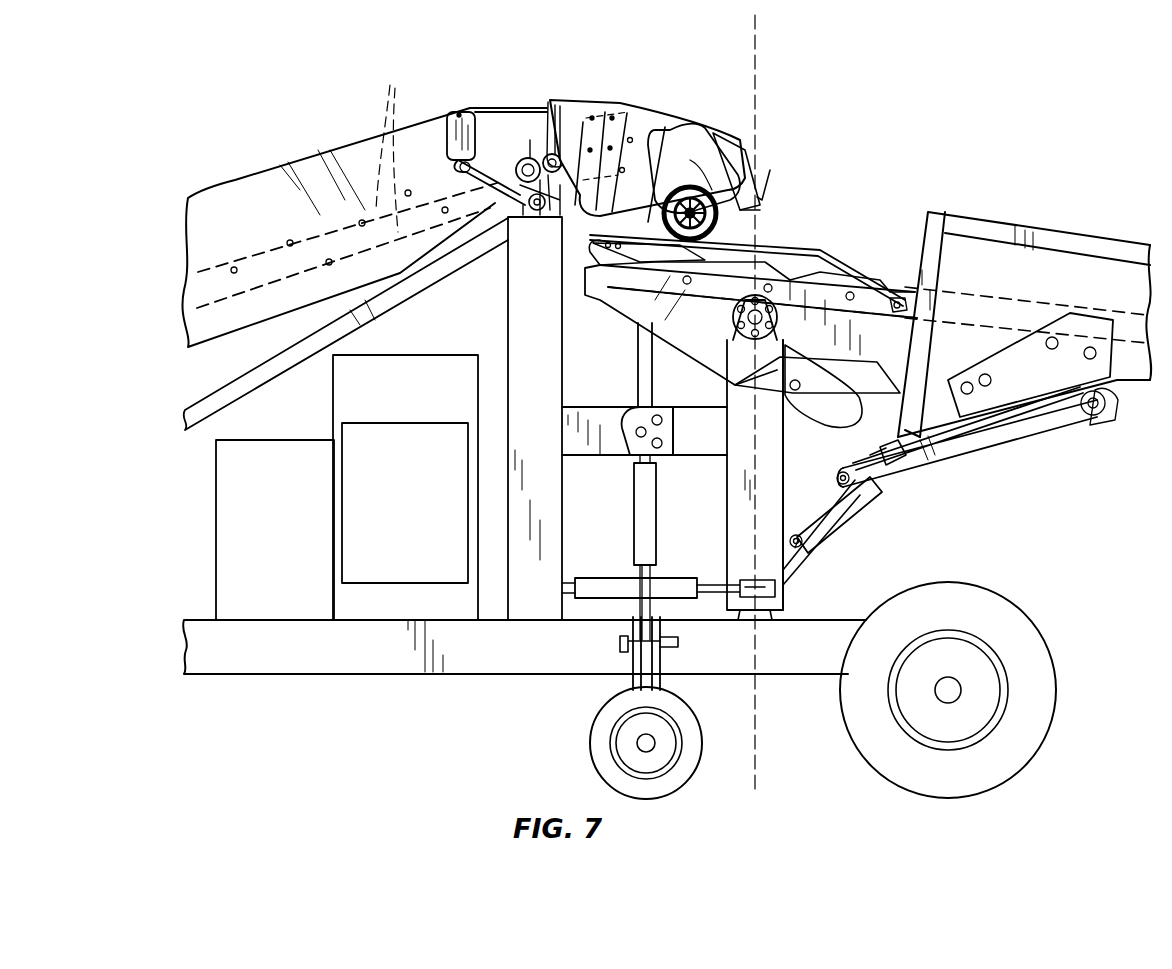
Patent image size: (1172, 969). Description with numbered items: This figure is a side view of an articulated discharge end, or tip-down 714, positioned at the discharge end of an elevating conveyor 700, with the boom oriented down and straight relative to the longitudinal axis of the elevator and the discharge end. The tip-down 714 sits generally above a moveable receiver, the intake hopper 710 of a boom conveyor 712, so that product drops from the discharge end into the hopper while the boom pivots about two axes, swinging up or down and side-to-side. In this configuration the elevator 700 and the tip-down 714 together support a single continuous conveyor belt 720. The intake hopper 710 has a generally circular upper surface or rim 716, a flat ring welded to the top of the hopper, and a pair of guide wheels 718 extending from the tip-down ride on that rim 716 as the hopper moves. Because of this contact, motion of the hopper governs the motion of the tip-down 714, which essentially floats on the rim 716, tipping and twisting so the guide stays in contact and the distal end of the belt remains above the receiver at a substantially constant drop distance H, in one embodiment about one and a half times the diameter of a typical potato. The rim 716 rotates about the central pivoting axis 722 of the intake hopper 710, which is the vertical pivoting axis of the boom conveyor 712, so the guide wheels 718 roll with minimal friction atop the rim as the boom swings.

The elevating conveyor 700 is at (330, 132).
The intake hopper 710 is at (790, 236).
The boom conveyor 712 is at (1073, 270).
The tip-down 714 is at (676, 100).
The rim 716 is at (805, 230).
The guide wheels 718 is at (700, 185).
The conveyor belt 720 is at (394, 148).
The pivoting axis 722 is at (757, 742).
The drop distance H is at (736, 185).